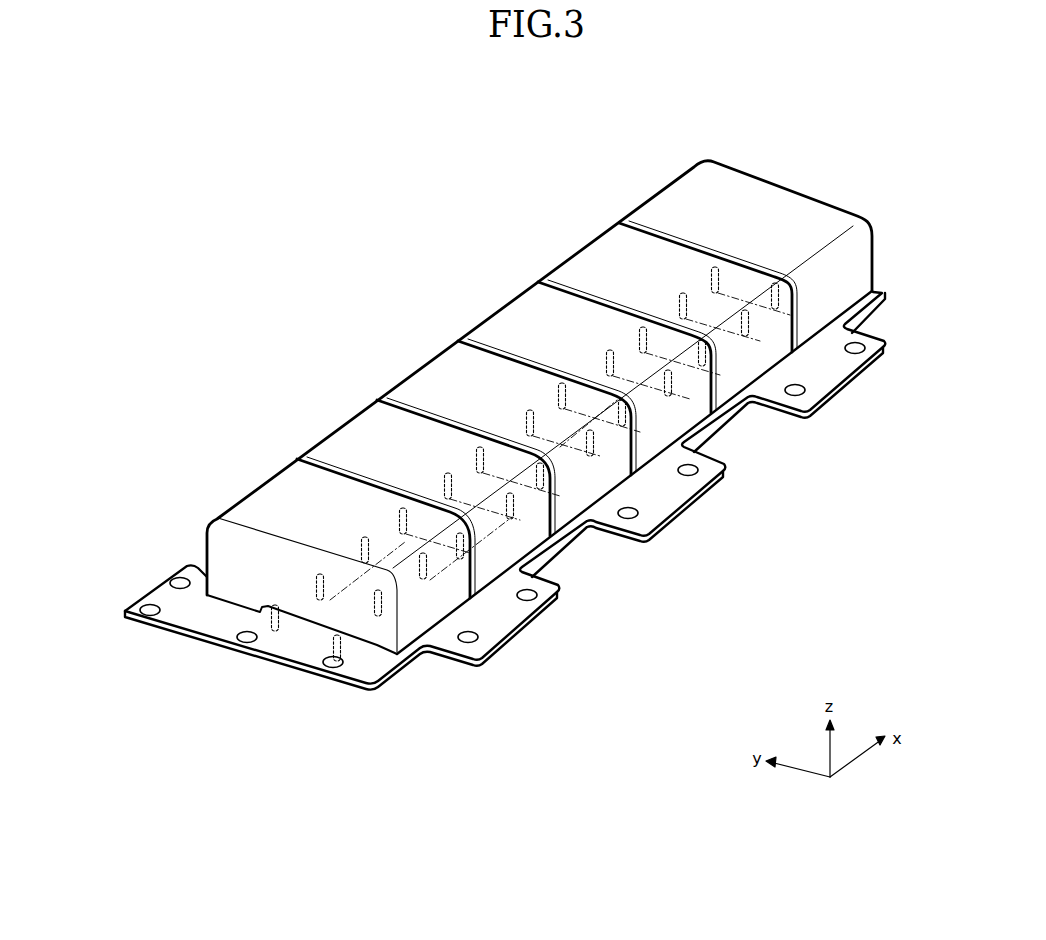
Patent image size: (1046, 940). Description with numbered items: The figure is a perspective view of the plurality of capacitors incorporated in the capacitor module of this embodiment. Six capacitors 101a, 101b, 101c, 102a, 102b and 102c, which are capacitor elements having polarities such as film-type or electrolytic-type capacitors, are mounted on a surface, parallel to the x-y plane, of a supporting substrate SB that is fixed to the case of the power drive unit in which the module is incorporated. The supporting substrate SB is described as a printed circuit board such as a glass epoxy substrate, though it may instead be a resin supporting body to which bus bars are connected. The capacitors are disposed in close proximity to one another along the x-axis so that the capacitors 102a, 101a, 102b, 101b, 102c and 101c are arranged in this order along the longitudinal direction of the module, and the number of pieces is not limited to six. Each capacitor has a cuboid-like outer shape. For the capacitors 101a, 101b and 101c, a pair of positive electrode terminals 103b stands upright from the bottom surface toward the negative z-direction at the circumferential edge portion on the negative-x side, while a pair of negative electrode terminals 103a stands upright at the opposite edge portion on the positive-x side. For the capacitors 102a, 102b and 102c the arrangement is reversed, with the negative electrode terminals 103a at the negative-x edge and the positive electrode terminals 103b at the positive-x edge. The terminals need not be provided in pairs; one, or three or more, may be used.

The capacitor 101a is at (345, 450).
The capacitor 101b is at (513, 320).
The capacitor 101c is at (682, 200).
The capacitor 102a is at (265, 512).
The capacitor 102b is at (433, 393).
The capacitor 102c is at (592, 260).
The negative electrode terminal 103a is at (352, 678).
The positive electrode terminal 103b is at (278, 632).
The supporting substrate SB is at (160, 593).